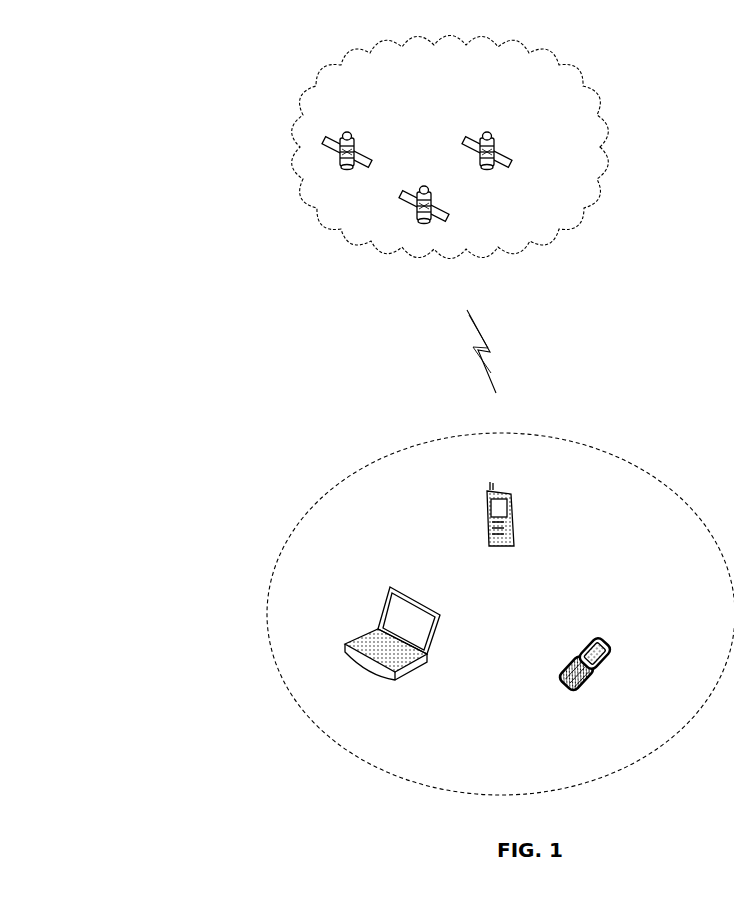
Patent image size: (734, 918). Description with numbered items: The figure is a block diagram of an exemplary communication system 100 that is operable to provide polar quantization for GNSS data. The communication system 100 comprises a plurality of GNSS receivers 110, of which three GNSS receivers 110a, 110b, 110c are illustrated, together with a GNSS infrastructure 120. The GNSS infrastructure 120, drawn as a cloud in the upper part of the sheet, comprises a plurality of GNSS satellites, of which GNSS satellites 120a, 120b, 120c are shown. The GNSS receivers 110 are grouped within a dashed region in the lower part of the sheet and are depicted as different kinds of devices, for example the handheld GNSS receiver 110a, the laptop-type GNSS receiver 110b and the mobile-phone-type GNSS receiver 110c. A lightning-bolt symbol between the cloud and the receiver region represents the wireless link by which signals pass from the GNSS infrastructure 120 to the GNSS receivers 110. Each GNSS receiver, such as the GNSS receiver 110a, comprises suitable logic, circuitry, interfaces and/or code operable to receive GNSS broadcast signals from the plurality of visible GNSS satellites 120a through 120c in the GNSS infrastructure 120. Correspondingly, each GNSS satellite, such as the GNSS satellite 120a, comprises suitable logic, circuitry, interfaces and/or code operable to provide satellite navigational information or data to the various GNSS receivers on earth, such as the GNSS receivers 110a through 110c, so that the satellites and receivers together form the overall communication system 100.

The communication system 100 is at (106, 78).
The GNSS receivers 110 is at (311, 499).
The GNSS receiver 110a is at (518, 520).
The GNSS receiver 110b is at (440, 641).
The GNSS receiver 110c is at (620, 652).
The GNSS infrastructure 120 is at (594, 110).
The GNSS satellite 120a is at (374, 164).
The GNSS satellite 120b is at (496, 150).
The GNSS satellite 120c is at (481, 194).